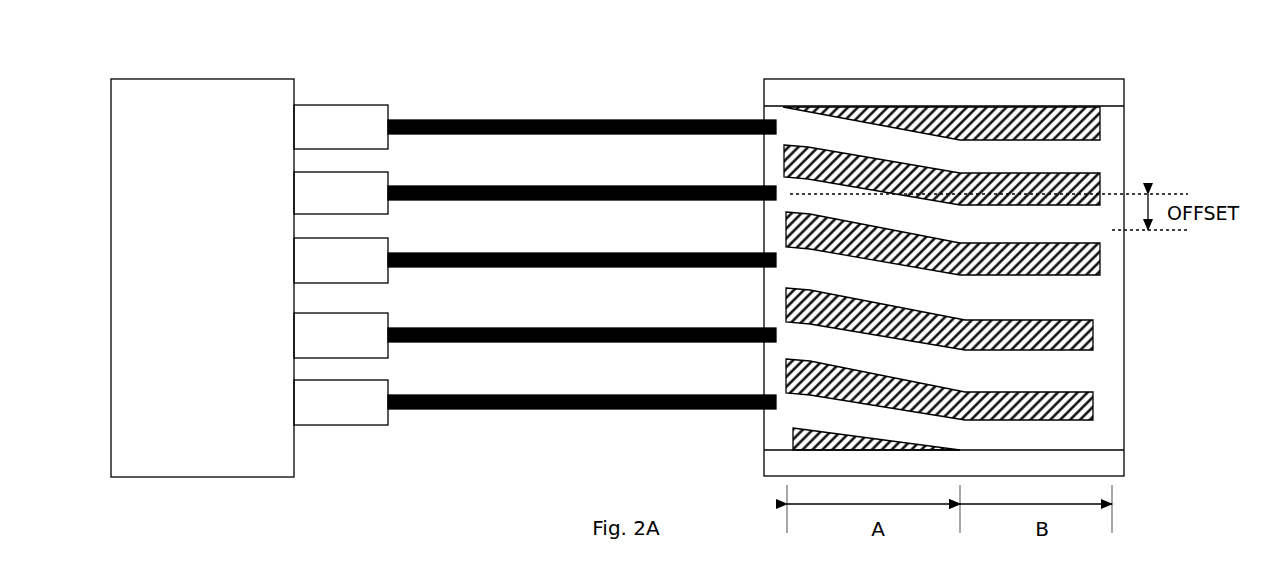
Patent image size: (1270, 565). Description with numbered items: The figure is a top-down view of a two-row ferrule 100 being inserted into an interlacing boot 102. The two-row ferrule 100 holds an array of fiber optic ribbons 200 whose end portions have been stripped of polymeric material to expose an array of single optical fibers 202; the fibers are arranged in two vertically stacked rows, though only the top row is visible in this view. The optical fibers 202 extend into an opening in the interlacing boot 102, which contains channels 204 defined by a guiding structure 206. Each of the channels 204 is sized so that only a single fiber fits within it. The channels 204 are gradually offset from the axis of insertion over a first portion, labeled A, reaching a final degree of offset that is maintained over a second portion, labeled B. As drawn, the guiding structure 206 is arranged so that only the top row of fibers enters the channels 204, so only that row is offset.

The two-row ferrule 100 is at (185, 281).
The fiber optic ribbons 200 is at (344, 108).
The optical fibers 202 is at (557, 104).
The interlacing boot 102 is at (870, 52).
The channels 204 is at (1080, 160).
The guiding structure 206 is at (1104, 330).